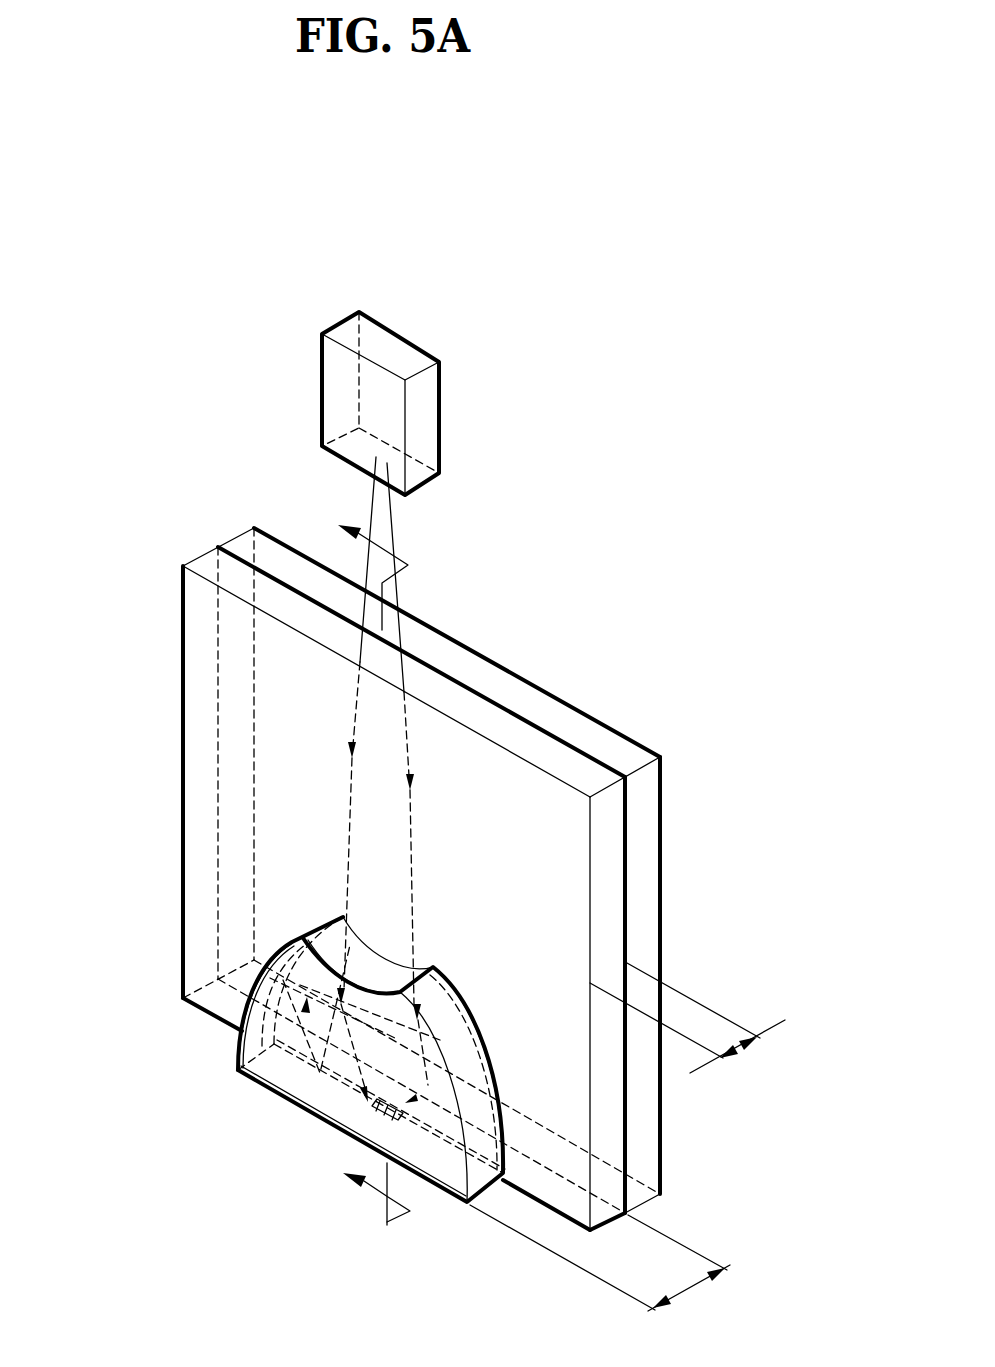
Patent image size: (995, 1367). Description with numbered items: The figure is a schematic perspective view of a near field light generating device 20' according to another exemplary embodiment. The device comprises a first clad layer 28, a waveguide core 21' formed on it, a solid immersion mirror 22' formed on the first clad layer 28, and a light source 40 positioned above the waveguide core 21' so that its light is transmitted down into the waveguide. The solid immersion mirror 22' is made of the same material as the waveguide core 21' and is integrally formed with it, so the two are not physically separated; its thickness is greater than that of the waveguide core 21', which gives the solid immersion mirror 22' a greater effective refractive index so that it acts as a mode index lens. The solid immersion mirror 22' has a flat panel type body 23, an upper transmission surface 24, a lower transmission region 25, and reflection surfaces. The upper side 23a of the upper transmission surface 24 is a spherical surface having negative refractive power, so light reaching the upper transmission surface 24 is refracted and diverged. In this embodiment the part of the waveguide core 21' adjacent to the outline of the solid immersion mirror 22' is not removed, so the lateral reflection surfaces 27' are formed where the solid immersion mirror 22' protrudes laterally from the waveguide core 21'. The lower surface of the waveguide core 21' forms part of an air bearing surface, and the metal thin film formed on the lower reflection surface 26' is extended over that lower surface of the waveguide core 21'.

The near field light generating device 20' is at (403, 815).
The light source 40 is at (441, 378).
The waveguide core 21' is at (460, 879).
The first clad layer 28 is at (630, 748).
The solid immersion mirror 22' is at (263, 1061).
The upper transmission surface 24 is at (377, 938).
The upper side of the upper transmission surface 23a is at (262, 967).
The flat panel type body 23 is at (238, 1015).
The lateral reflection surfaces 27' is at (297, 1069).
The lower reflection surface 26' is at (251, 1127).
The lower transmission region 25 is at (340, 1127).